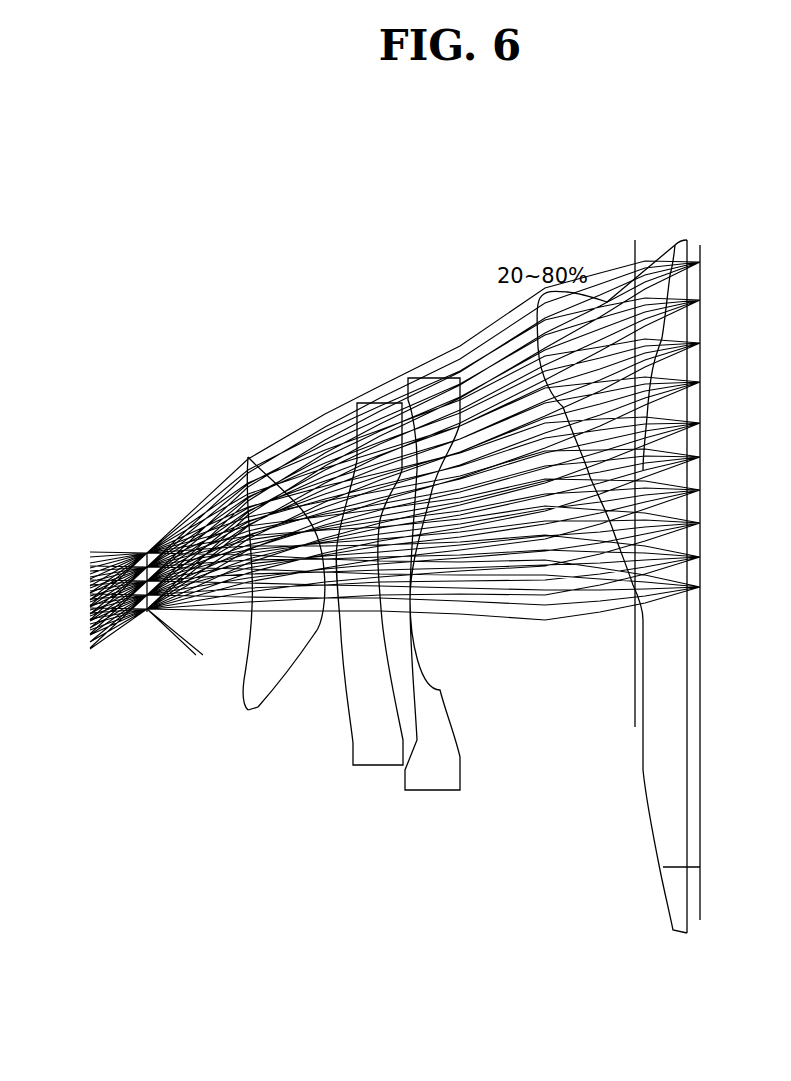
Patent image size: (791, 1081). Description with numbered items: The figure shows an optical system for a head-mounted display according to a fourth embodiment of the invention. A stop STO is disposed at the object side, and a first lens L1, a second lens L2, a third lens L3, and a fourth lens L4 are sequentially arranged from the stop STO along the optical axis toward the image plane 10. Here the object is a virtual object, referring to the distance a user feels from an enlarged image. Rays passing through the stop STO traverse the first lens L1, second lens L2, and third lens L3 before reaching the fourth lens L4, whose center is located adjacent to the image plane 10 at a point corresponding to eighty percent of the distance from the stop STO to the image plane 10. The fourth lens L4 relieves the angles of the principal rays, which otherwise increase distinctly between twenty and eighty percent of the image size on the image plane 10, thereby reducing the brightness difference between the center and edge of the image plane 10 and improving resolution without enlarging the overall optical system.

The stop STO is at (147, 553).
The first lens L1 is at (248, 457).
The second lens L2 is at (360, 402).
The third lens L3 is at (448, 378).
The fourth lens L4 is at (647, 770).
The image plane 10 is at (662, 871).